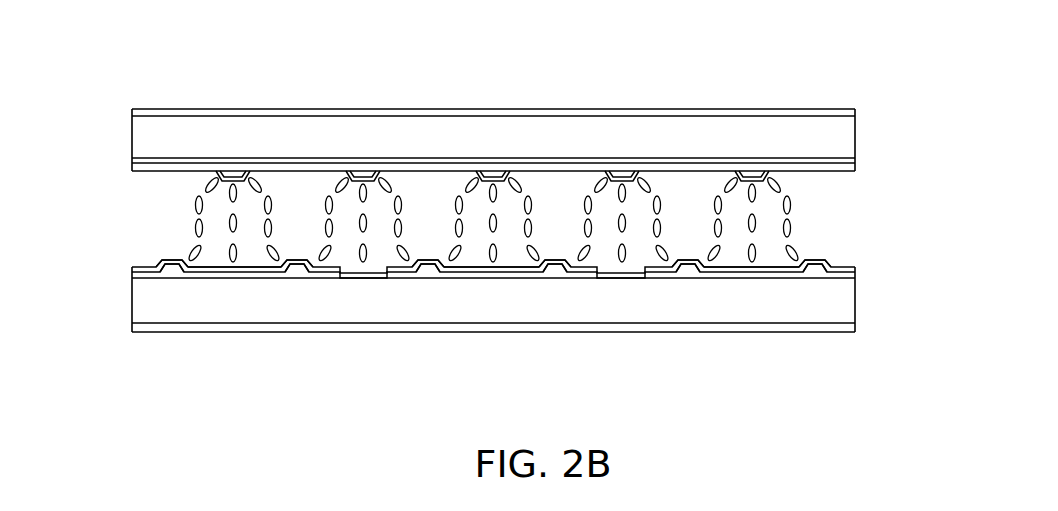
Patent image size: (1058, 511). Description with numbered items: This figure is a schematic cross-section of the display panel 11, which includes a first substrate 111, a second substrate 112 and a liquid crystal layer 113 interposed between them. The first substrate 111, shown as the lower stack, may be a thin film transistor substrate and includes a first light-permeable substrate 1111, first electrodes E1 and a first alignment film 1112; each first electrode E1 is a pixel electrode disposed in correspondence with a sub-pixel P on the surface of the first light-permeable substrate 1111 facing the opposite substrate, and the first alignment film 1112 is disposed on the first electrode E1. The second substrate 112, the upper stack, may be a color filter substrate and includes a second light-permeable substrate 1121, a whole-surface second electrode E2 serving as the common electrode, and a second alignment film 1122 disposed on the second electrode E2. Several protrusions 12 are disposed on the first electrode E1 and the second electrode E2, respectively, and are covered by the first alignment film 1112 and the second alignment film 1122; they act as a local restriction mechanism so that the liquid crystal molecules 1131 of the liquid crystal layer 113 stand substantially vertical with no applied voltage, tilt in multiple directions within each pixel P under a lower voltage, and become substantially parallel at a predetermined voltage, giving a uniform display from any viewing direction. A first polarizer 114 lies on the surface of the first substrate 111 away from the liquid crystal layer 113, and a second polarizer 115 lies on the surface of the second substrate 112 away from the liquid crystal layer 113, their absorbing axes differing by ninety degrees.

The display panel 11 is at (240, 66).
The first substrate 111 is at (695, 345).
The first light-permeable substrate 1111 is at (844, 299).
The first alignment film 1112 is at (822, 259).
The second substrate 112 is at (802, 102).
The second light-permeable substrate 1121 is at (845, 133).
The second alignment film 1122 is at (332, 171).
The liquid crystal layer 113 is at (146, 221).
The liquid crystal molecule 1131 is at (796, 205).
The first polarizer 114 is at (843, 326).
The second polarizer 115 is at (852, 111).
The protrusion 12 is at (488, 172).
The sub-pixel P is at (200, 164).
The first electrode E1 is at (225, 278).
The second electrode E2 is at (563, 163).